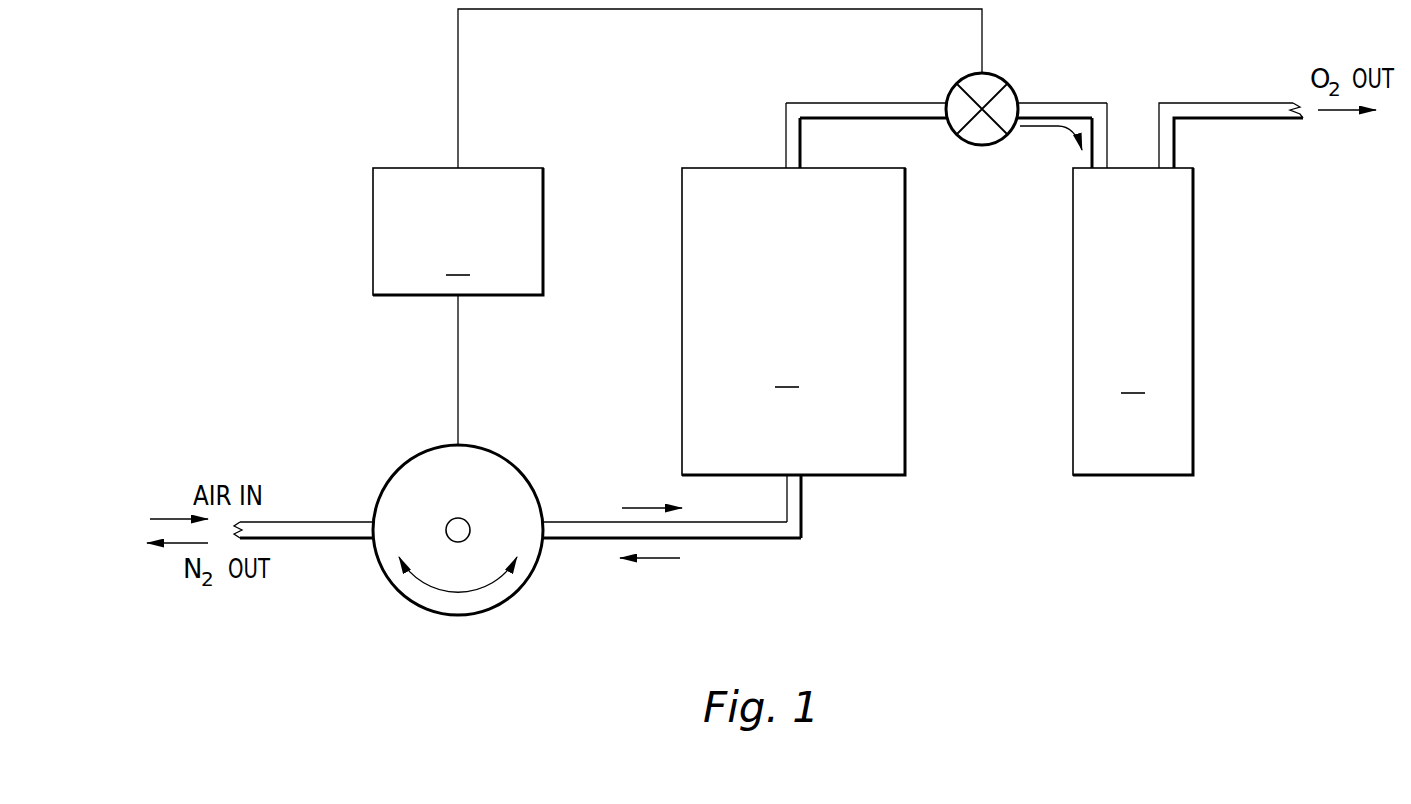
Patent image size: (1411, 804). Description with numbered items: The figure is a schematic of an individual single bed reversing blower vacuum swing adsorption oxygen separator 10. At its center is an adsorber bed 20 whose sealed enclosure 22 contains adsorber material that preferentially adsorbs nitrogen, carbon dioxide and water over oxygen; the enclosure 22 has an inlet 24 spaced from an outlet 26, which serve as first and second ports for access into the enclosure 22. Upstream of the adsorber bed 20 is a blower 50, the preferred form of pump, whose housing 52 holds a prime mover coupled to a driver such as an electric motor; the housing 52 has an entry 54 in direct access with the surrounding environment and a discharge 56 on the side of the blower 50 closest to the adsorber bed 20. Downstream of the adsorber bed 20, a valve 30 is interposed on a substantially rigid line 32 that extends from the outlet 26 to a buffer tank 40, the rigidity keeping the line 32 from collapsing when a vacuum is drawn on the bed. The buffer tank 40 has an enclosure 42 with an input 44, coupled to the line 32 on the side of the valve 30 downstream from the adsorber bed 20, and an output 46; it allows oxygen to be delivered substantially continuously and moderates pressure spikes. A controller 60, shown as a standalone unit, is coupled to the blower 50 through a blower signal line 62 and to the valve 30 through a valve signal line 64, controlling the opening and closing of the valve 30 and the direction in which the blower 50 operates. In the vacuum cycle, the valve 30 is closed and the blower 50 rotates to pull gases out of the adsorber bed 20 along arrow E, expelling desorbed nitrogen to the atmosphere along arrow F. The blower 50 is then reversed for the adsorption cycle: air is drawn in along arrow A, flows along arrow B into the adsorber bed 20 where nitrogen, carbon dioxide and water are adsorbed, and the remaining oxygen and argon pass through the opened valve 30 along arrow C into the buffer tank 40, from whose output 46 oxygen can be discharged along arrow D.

The oxygen separator unit 10 is at (975, 548).
The adsorber bed 20 is at (829, 321).
The enclosure 22 is at (905, 378).
The inlet 24 is at (800, 508).
The outlet 26 is at (790, 156).
The valve 30 is at (993, 78).
The line 32 is at (866, 112).
The buffer tank 40 is at (1167, 321).
The enclosure 42 is at (1193, 362).
The input 44 is at (1100, 130).
The output 46 is at (1166, 144).
The blower 50 is at (458, 532).
The housing 52 is at (458, 617).
The entry 54 is at (308, 522).
The discharge 56 is at (572, 525).
The controller 60 is at (458, 231).
The blower signal line 62 is at (458, 352).
The valve signal line 64 is at (590, 10).
The arrow A is at (158, 518).
The arrow B is at (648, 506).
The arrow C is at (1035, 130).
The arrow D is at (1336, 112).
The arrow E is at (658, 560).
The arrow F is at (175, 546).